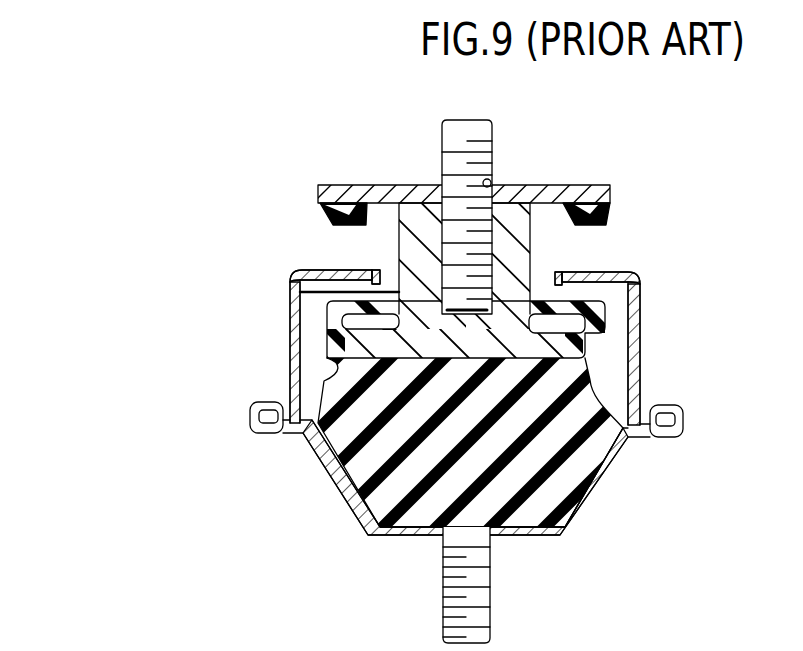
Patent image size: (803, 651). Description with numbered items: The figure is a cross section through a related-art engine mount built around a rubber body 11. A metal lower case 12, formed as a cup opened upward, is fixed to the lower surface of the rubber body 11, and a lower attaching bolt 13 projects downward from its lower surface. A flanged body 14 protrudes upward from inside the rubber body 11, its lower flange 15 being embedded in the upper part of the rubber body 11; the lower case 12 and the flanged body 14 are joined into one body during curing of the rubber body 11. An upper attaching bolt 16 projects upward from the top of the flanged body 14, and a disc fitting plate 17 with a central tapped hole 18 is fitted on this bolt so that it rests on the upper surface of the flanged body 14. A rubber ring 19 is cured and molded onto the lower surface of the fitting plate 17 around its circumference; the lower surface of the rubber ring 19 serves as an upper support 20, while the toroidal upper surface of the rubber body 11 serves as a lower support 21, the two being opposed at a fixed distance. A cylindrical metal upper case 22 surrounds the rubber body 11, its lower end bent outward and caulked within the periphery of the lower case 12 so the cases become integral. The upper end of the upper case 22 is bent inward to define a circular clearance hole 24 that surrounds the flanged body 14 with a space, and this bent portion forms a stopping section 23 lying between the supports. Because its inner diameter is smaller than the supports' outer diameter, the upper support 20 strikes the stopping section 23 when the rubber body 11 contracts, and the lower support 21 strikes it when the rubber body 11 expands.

The rubber body 11 is at (577, 470).
The lower case 12 is at (580, 515).
The lower attaching bolt 13 is at (490, 587).
The flanged body 14 is at (520, 247).
The lower flange 15 is at (579, 346).
The upper attaching bolt 16 is at (473, 128).
The disc fitting plate 17 is at (560, 187).
The tapped hole 18 is at (490, 179).
The rubber ring 19 is at (607, 208).
The upper support 20 is at (335, 227).
The lower support 21 is at (347, 291).
The upper case 22 is at (292, 385).
The stopping section 23 is at (360, 270).
The clearance hole 24 is at (382, 272).